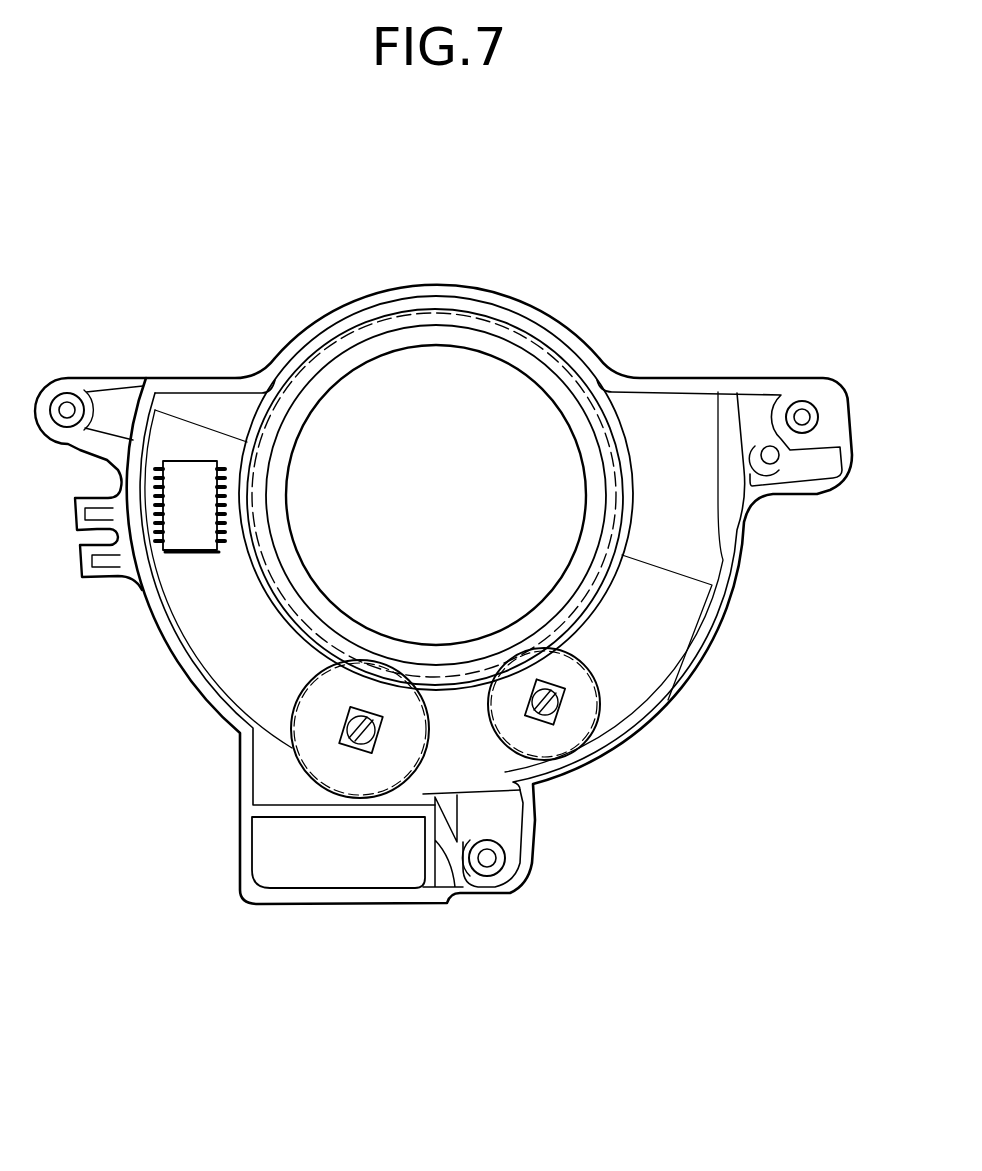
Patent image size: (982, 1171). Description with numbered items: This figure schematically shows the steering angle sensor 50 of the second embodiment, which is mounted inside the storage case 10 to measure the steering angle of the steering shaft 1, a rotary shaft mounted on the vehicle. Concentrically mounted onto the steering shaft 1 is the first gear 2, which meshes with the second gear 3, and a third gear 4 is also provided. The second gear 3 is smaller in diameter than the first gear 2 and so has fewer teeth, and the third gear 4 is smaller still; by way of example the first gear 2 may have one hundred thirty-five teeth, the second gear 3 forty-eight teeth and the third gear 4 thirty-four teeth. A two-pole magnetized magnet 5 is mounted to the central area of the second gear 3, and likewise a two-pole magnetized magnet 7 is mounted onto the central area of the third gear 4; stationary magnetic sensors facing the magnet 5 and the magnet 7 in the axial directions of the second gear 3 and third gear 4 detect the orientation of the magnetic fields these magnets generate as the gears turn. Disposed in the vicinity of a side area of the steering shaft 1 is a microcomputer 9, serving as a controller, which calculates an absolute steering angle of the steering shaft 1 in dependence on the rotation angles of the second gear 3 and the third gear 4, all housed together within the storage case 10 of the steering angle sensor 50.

The steering shaft 1 is at (421, 505).
The first gear 2 is at (601, 407).
The second gear 3 is at (327, 755).
The third gear 4 is at (563, 675).
The two-pole magnetized magnet 5 is at (347, 744).
The two-pole magnetized magnet 7 is at (563, 707).
The microcomputer 9 is at (181, 549).
The storage case 10 is at (173, 658).
The steering angle sensor 50 is at (745, 192).